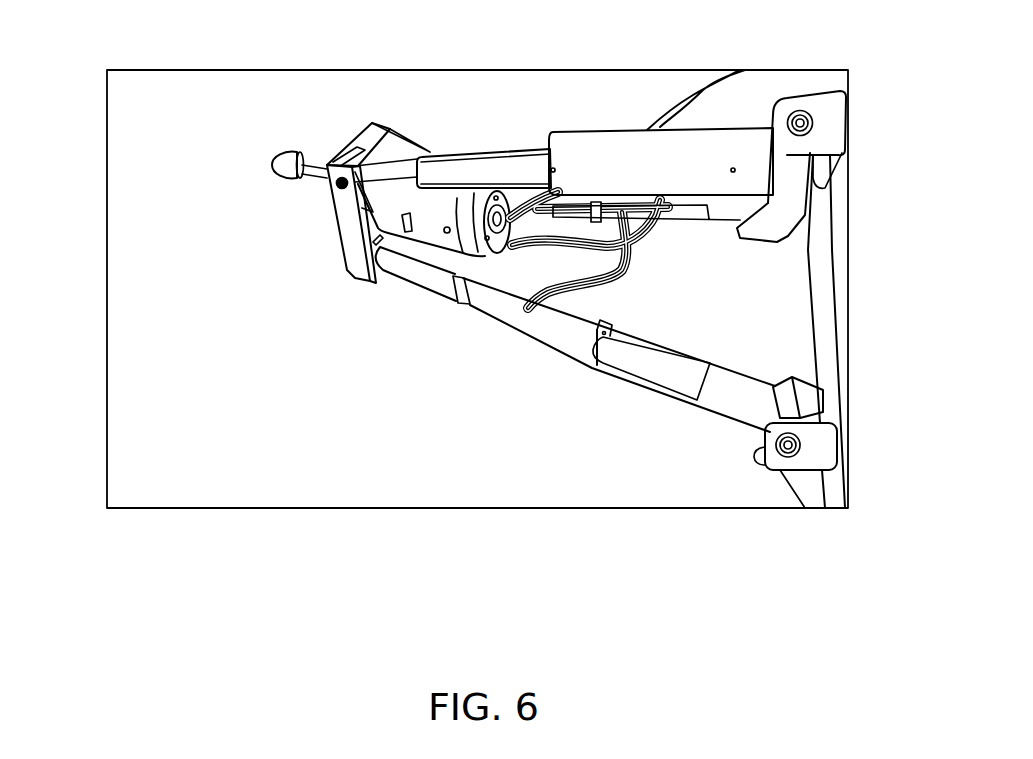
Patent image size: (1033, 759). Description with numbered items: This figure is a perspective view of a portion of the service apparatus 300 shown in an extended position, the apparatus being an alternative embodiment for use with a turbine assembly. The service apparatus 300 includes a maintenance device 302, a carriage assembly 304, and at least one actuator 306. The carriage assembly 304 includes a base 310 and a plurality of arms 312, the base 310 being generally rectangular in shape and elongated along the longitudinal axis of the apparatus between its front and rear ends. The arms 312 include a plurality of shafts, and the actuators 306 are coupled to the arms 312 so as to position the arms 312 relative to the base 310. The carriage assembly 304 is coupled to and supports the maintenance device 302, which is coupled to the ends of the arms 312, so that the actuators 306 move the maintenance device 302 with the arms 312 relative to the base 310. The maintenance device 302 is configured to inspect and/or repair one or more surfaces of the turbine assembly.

The service apparatus 300 is at (386, 99).
The maintenance device 302 is at (300, 170).
The carriage assembly 304 is at (827, 82).
The actuator 306 is at (722, 200).
The base 310 is at (803, 329).
The arms 312 is at (477, 175).